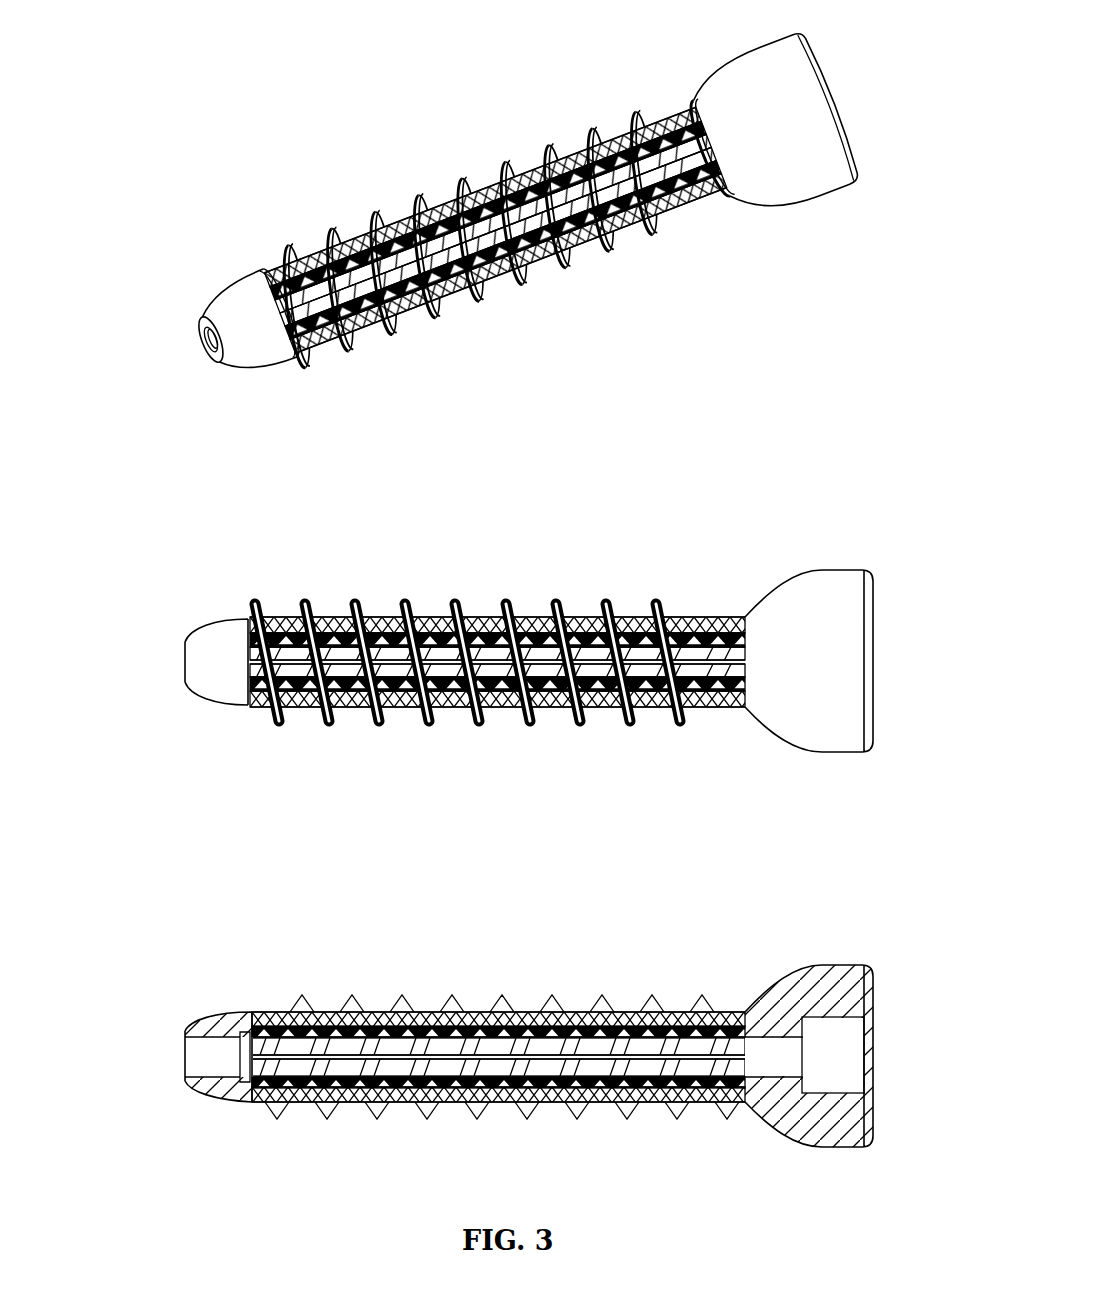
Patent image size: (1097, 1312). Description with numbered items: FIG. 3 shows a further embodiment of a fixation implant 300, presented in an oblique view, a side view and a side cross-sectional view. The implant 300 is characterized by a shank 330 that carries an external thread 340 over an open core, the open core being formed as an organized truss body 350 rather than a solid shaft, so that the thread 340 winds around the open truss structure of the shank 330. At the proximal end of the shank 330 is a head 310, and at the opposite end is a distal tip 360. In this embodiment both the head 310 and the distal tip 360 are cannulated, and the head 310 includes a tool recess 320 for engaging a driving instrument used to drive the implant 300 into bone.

The fixation implant 300 is at (504, 583).
The head 310 is at (793, 578).
The tool recess 320 is at (840, 1027).
The shank 330 is at (545, 160).
The external thread 340 is at (380, 207).
The organized truss body 350 is at (518, 273).
The distal tip 360 is at (200, 671).